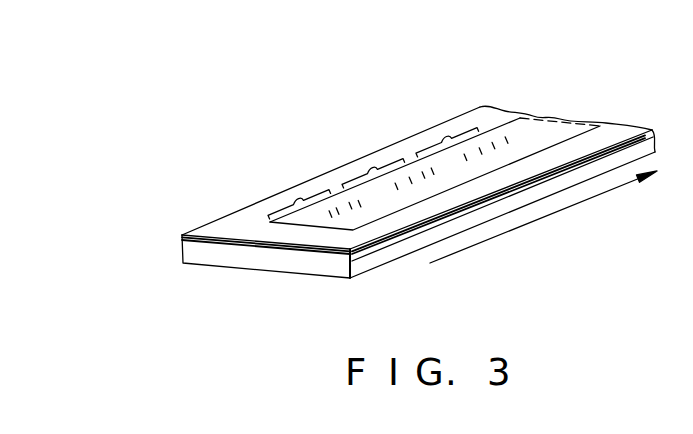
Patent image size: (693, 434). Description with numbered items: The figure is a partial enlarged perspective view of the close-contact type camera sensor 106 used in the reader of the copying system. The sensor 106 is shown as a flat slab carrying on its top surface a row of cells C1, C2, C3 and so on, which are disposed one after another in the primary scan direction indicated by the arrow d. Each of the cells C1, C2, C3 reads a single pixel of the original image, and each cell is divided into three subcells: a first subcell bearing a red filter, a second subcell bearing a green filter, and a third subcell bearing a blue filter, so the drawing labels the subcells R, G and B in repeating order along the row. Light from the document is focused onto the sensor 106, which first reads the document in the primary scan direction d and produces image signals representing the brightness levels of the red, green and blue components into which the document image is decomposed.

The close-contact type camera sensor 106 is at (238, 268).
The cell C1 is at (298, 198).
The cell C2 is at (372, 167).
The cell C3 is at (446, 136).
The primary scan direction d is at (518, 229).